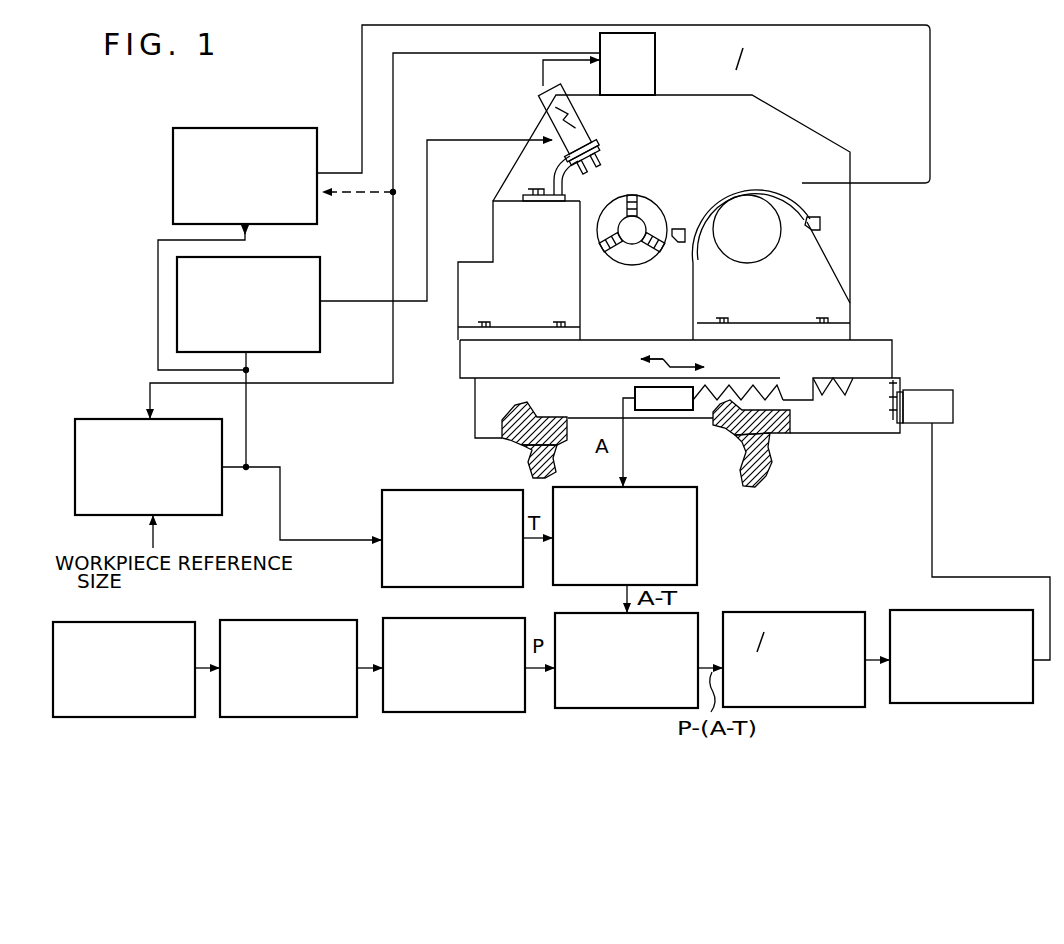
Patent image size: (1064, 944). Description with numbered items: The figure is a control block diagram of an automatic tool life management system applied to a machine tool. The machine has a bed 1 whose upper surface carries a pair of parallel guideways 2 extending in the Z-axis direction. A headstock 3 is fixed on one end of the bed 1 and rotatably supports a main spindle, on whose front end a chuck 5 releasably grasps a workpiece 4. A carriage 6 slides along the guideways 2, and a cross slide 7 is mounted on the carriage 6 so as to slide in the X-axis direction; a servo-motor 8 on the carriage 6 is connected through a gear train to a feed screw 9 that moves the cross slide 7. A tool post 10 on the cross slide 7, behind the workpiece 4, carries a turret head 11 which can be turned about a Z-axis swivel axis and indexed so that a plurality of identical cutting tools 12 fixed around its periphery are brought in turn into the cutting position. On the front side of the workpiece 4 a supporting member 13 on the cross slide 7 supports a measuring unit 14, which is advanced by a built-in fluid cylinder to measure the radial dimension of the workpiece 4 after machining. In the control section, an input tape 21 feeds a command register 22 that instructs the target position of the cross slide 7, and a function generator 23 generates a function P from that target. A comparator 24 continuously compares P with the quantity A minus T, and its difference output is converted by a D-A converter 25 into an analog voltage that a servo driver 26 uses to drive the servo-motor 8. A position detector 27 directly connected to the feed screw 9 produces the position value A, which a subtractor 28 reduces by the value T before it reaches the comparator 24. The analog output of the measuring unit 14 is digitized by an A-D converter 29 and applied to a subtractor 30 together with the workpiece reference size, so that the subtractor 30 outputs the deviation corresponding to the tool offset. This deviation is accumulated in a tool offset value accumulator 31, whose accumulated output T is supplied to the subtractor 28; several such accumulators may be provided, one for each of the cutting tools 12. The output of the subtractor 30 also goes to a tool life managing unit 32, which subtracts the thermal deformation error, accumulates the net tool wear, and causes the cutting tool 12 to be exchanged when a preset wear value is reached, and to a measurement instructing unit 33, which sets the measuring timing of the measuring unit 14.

The bed 1 is at (553, 452).
The guideways 2 is at (535, 412).
The headstock 3 is at (815, 140).
The workpiece 4 is at (638, 224).
The chuck 5 is at (645, 262).
The carriage 6 is at (875, 427).
The cross slide 7 is at (800, 387).
The servo-motor 8 is at (943, 390).
The feed screw 9 is at (845, 395).
The tool post 10 is at (708, 292).
The turret head 11 is at (742, 168).
The cutting tools 12 is at (678, 222).
The supporting member 13 is at (575, 277).
The measuring unit 14 is at (588, 117).
The input tape 21 is at (150, 622).
The command register 22 is at (298, 620).
The function generator 23 is at (472, 618).
The comparator 24 is at (565, 613).
The D-A converter 25 is at (808, 612).
The servo driver 26 is at (975, 610).
The position detector 27 is at (663, 410).
The subtractor 28 is at (698, 545).
The A-D converter 29 is at (657, 72).
The subtractor 30 is at (131, 418).
The tool offset value accumulator 31 is at (426, 490).
The tool life managing unit 32 is at (268, 128).
The measurement instructing unit 33 is at (274, 257).